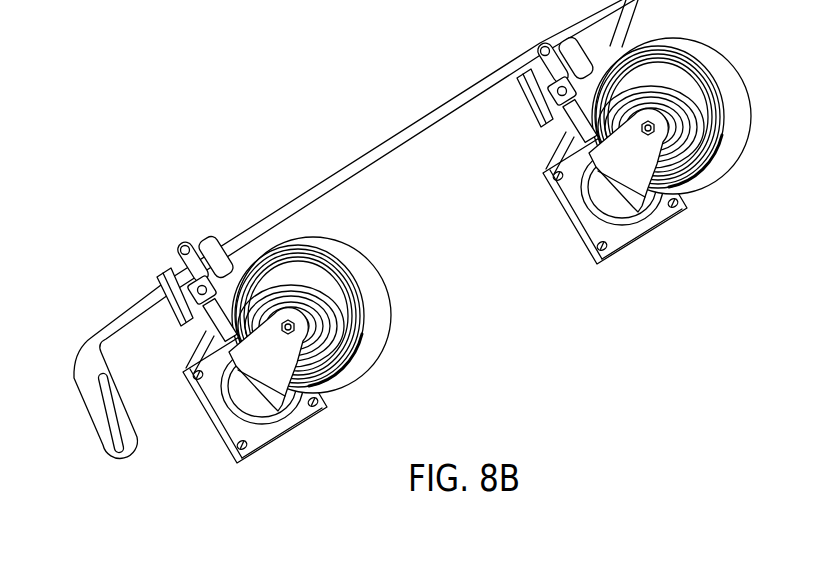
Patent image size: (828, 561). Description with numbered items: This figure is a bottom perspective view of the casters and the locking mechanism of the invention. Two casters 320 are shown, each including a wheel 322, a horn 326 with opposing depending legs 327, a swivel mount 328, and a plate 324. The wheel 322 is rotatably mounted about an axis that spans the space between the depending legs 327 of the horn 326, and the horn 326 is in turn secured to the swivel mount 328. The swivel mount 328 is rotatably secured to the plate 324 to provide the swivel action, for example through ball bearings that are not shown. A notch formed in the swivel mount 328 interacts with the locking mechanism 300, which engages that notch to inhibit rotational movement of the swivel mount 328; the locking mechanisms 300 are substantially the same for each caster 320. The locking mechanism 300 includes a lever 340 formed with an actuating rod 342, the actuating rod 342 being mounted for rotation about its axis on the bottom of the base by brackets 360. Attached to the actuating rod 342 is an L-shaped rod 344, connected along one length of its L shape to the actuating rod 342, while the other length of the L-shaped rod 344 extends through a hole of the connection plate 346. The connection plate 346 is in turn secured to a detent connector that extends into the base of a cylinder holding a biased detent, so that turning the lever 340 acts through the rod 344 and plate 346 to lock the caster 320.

The locking mechanism 300 is at (409, 258).
The caster 320 is at (403, 258).
The wheel 322 is at (722, 85).
The plate 324 is at (597, 238).
The horn 326 is at (628, 204).
The depending legs 327 is at (295, 421).
The swivel mount 328 is at (232, 398).
The lever 340 is at (93, 422).
The actuating rod 342 is at (121, 308).
The L-shaped rod 344 is at (552, 40).
The connection plate 346 is at (180, 250).
The brackets 360 is at (530, 67).